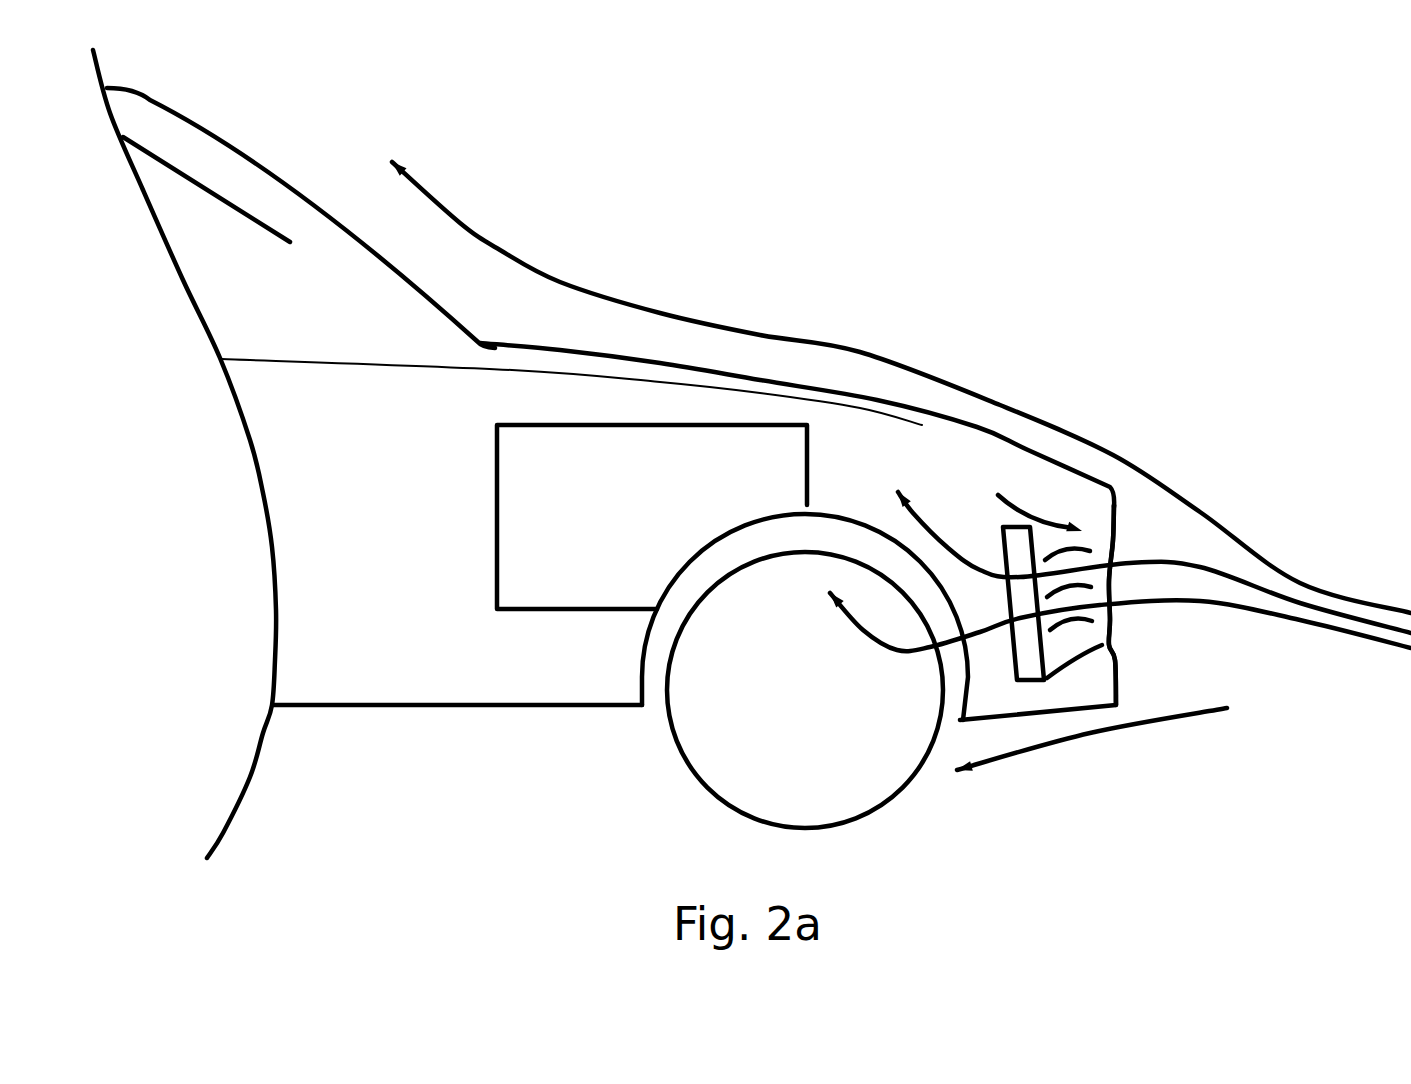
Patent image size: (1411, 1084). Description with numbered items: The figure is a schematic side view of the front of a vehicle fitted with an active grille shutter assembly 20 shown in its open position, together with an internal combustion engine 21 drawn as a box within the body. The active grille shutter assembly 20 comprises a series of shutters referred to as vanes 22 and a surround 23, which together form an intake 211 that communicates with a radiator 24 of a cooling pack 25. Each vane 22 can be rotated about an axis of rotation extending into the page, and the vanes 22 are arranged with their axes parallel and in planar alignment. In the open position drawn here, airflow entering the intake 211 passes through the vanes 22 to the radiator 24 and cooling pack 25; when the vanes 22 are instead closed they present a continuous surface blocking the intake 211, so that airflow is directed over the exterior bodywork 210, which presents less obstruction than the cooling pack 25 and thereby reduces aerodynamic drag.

The active grille shutter assembly 20 is at (1053, 503).
The internal combustion engine 21 is at (634, 518).
The vanes 22 is at (1076, 622).
The surround 23 is at (1060, 524).
The radiator 24 is at (1025, 668).
The cooling pack 25 is at (1040, 686).
The exterior bodywork 210 is at (977, 427).
The intake 211 is at (1100, 531).